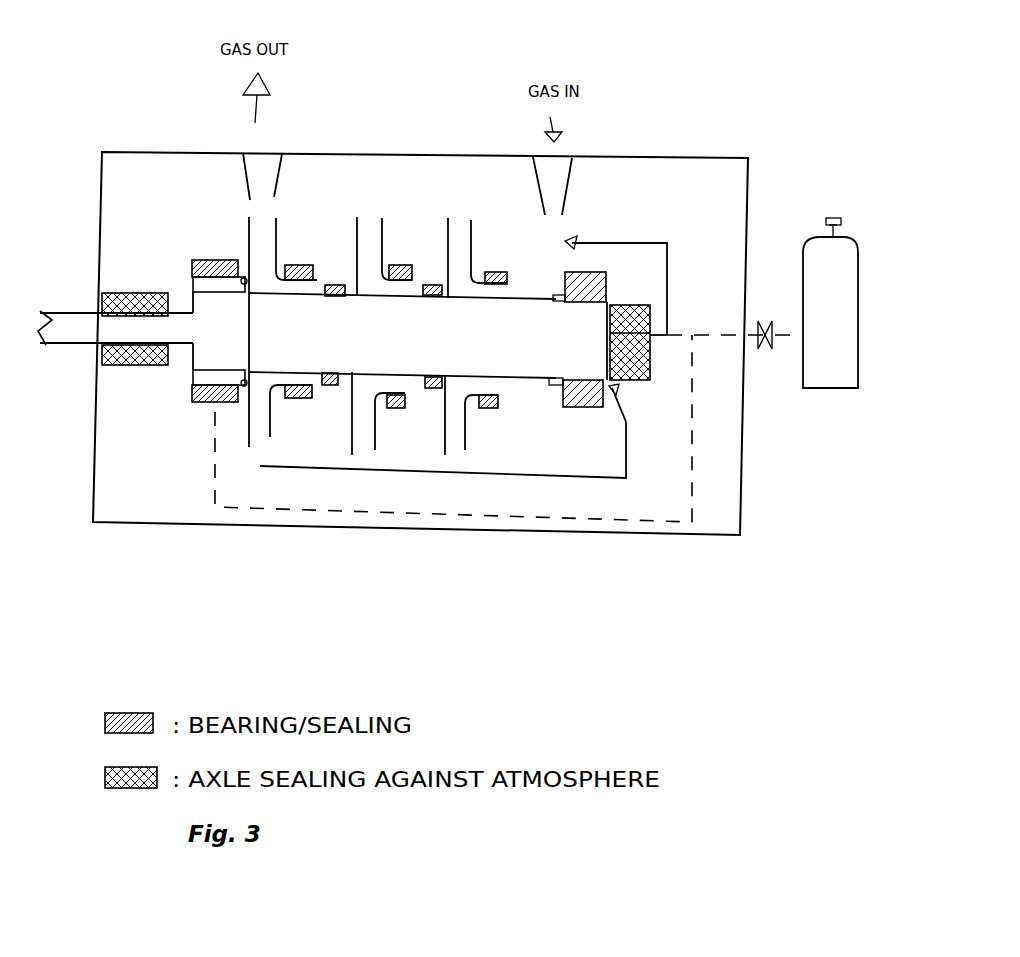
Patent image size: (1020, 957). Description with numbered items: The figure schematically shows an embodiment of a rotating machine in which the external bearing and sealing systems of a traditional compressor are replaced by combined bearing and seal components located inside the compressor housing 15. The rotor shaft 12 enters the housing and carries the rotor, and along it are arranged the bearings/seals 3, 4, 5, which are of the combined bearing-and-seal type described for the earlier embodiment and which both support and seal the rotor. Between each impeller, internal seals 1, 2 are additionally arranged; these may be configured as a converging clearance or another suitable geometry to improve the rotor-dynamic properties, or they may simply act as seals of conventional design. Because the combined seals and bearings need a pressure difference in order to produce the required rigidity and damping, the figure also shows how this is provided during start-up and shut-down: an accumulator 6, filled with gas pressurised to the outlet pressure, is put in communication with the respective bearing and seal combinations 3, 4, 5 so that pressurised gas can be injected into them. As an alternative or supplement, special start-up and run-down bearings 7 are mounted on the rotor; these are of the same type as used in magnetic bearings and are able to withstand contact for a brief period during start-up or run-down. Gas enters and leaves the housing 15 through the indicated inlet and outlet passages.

The internal seal 1 is at (335, 285).
The internal seal 2 is at (301, 265).
The bearing/seal combination 3 is at (207, 260).
The bearing/seal combination 4 is at (585, 273).
The bearing/seal combination 5 is at (645, 365).
The accumulator 6 is at (813, 255).
The start-up and run-down bearings 7 is at (243, 280).
The rotor shaft 12 is at (73, 343).
The compressor housing 15 is at (405, 532).